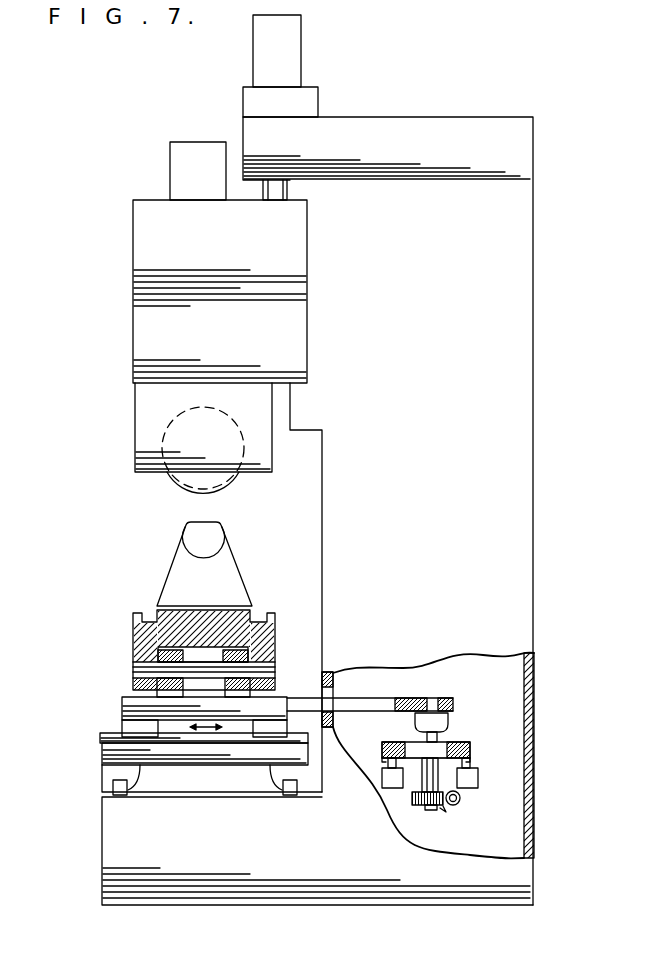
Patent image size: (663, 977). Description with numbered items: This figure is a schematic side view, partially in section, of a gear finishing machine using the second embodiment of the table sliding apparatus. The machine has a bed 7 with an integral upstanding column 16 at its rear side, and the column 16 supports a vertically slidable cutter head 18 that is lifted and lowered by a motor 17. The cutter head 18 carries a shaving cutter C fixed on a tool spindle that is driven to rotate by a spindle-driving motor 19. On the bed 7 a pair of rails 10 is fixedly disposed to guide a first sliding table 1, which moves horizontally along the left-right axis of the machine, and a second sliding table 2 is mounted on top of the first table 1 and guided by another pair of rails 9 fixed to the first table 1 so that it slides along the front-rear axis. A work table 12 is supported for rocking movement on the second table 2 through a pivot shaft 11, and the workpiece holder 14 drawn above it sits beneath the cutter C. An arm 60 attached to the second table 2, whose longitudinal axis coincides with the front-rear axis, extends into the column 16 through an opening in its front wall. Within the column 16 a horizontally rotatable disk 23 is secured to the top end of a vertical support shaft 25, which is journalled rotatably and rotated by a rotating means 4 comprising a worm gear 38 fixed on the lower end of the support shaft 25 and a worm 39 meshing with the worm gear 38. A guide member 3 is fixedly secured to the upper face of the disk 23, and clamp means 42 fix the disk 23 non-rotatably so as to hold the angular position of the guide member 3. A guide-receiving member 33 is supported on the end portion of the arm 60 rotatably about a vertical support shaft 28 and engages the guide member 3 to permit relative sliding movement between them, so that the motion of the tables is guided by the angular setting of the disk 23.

The first sliding table 1 is at (110, 753).
The second sliding table 2 is at (128, 705).
The guide member 3 is at (475, 742).
The rotating means 4 is at (445, 812).
The bed 7 is at (193, 868).
The rails 9 is at (103, 740).
The rails 10 is at (290, 785).
The pivot shaft 11 is at (263, 670).
The work table 12 is at (153, 633).
The workpiece holder 14 is at (212, 578).
The column 16 is at (493, 402).
The motor 17 is at (285, 72).
The cutter head 18 is at (157, 320).
The spindle-driving motor 19 is at (180, 169).
The disk 23 is at (475, 747).
The support shaft 25 is at (423, 775).
The support shaft 28 is at (435, 700).
The guide-receiving member 33 is at (412, 723).
The worm gear 38 is at (417, 807).
The worm 39 is at (462, 800).
The clamp means 42 is at (472, 775).
The arm 60 is at (378, 698).
The shaving cutter C is at (178, 480).